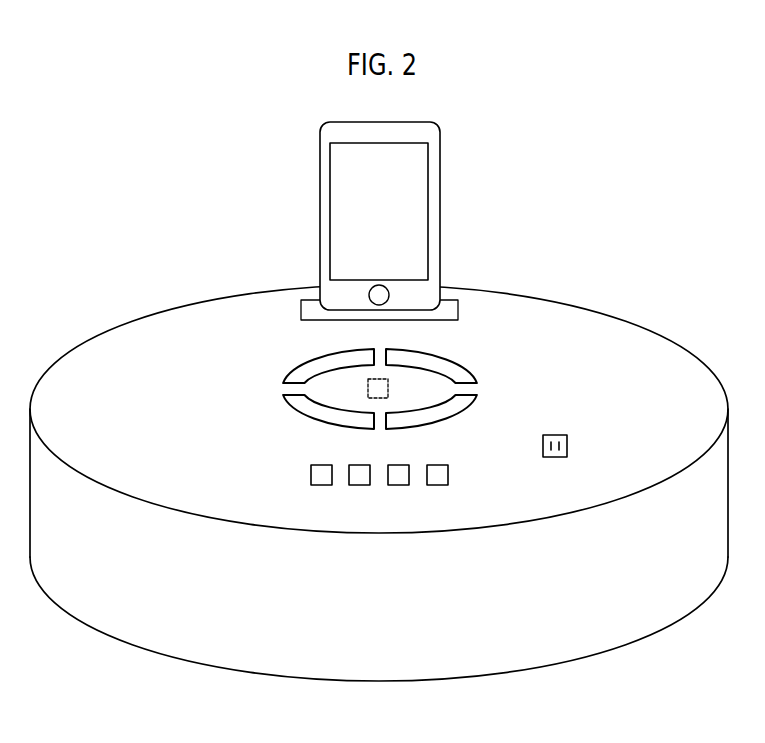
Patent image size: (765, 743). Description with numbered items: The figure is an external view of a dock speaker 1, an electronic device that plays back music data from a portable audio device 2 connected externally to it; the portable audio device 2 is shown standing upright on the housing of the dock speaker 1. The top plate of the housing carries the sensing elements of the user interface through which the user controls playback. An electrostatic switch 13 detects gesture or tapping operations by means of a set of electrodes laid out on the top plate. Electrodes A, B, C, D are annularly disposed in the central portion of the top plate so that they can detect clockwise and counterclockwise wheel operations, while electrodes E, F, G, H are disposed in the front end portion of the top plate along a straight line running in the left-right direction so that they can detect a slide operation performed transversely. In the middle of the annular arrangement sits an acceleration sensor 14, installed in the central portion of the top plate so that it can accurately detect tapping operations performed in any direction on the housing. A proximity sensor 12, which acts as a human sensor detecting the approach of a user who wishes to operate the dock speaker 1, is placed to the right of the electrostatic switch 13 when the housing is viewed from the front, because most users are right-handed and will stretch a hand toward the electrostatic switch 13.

The dock speaker 1 is at (614, 317).
The portable audio device 2 is at (379, 121).
The proximity sensor 12 is at (554, 434).
The electrostatic switch 13 is at (354, 426).
The acceleration sensor 14 is at (390, 388).
The electrode A is at (320, 357).
The electrode B is at (440, 357).
The electrode C is at (440, 421).
The electrode D is at (320, 421).
The electrode E is at (321, 486).
The electrode F is at (360, 486).
The electrode G is at (399, 486).
The electrode H is at (438, 486).